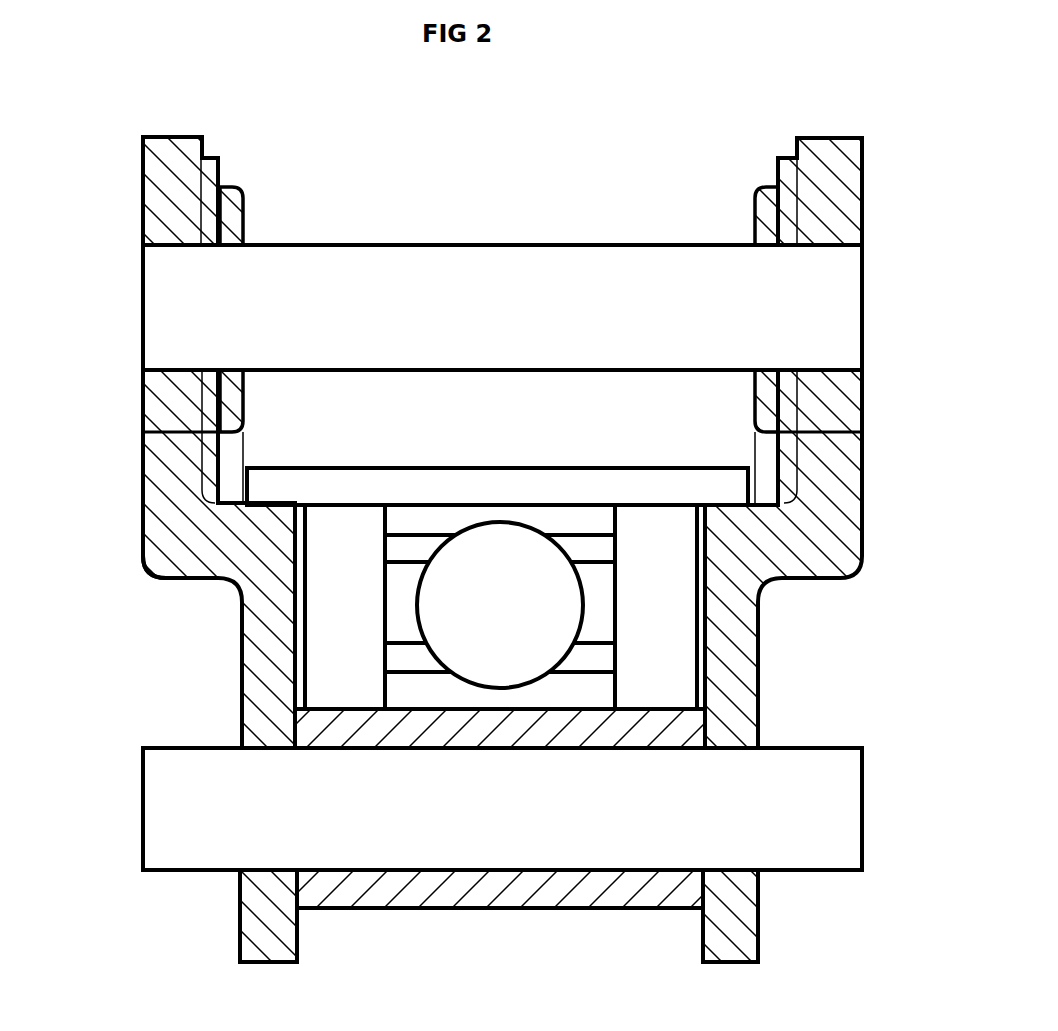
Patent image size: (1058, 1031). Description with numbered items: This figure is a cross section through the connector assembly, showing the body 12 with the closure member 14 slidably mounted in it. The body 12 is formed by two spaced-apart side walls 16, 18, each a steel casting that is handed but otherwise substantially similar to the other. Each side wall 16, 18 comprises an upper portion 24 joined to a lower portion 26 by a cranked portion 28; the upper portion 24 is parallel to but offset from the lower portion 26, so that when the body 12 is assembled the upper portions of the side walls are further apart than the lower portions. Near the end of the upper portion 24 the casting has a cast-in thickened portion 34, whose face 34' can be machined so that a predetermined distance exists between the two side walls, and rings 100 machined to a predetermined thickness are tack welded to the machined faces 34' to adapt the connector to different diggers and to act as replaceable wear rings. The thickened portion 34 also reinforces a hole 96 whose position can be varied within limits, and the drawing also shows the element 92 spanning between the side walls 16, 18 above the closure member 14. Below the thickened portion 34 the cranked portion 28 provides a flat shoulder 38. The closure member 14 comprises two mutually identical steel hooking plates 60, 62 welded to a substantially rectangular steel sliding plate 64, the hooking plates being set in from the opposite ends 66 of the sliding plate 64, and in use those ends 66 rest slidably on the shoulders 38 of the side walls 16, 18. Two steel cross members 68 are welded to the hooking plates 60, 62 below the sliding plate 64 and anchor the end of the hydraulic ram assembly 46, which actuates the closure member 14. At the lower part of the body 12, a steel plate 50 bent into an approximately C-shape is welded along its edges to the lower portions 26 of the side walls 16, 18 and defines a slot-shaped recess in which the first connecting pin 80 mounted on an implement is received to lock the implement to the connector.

The body 12 is at (878, 192).
The closure member 14 is at (540, 468).
The side wall 16 is at (178, 132).
The side wall 18 is at (822, 137).
The upper portion 24 is at (158, 172).
The lower portion 26 is at (255, 675).
The cranked portion 28 is at (170, 578).
The thickened portion 34 is at (239, 123).
The machined face 34' is at (258, 176).
The shoulder 38 is at (245, 502).
The hydraulic ram assembly 46 is at (527, 682).
The steel plate 50 is at (572, 728).
The hooking plate 60 is at (348, 537).
The hooking plate 62 is at (643, 543).
The sliding plate 64 is at (415, 493).
The ends of the sliding plate 66 is at (745, 468).
The cross members 68 is at (407, 553).
The connecting pin 80 is at (835, 812).
The upper platen 92 is at (173, 318).
The hole 96 is at (143, 253).
The rings 100 is at (243, 216).